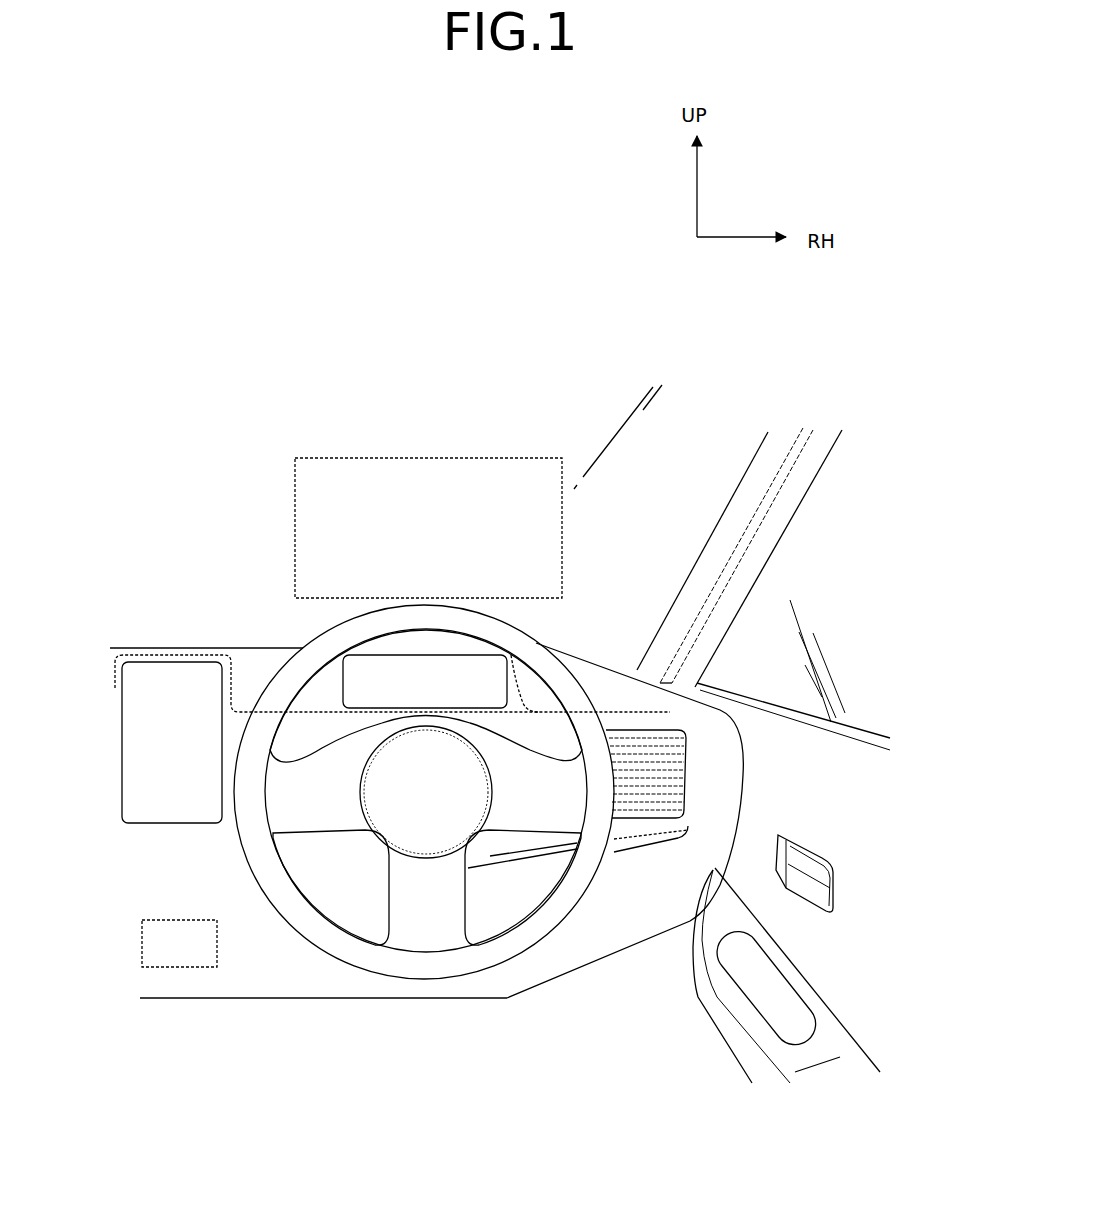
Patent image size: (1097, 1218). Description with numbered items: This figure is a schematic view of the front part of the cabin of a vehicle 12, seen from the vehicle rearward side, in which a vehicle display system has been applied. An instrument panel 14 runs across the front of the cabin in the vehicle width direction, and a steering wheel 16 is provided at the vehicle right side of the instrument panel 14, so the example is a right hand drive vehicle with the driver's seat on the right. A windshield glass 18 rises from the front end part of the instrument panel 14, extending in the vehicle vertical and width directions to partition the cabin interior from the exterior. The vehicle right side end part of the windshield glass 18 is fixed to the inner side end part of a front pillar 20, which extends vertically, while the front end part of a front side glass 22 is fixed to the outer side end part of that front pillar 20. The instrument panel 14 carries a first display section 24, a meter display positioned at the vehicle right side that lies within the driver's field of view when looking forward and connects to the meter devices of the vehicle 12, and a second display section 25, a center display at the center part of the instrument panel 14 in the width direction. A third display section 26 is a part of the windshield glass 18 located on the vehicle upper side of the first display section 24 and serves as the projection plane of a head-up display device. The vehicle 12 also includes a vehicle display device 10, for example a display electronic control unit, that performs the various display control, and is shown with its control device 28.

The vehicle display device 10 is at (377, 416).
The vehicle 12 is at (412, 326).
The instrument panel 14 is at (602, 957).
The steering wheel 16 is at (588, 683).
The windshield glass 18 is at (682, 533).
The front pillar 20 is at (747, 470).
The front side glass 22 is at (860, 683).
The first display section 24 is at (370, 677).
The second display section 25 is at (172, 825).
The third display section 26 is at (428, 458).
The control device 28 is at (172, 967).